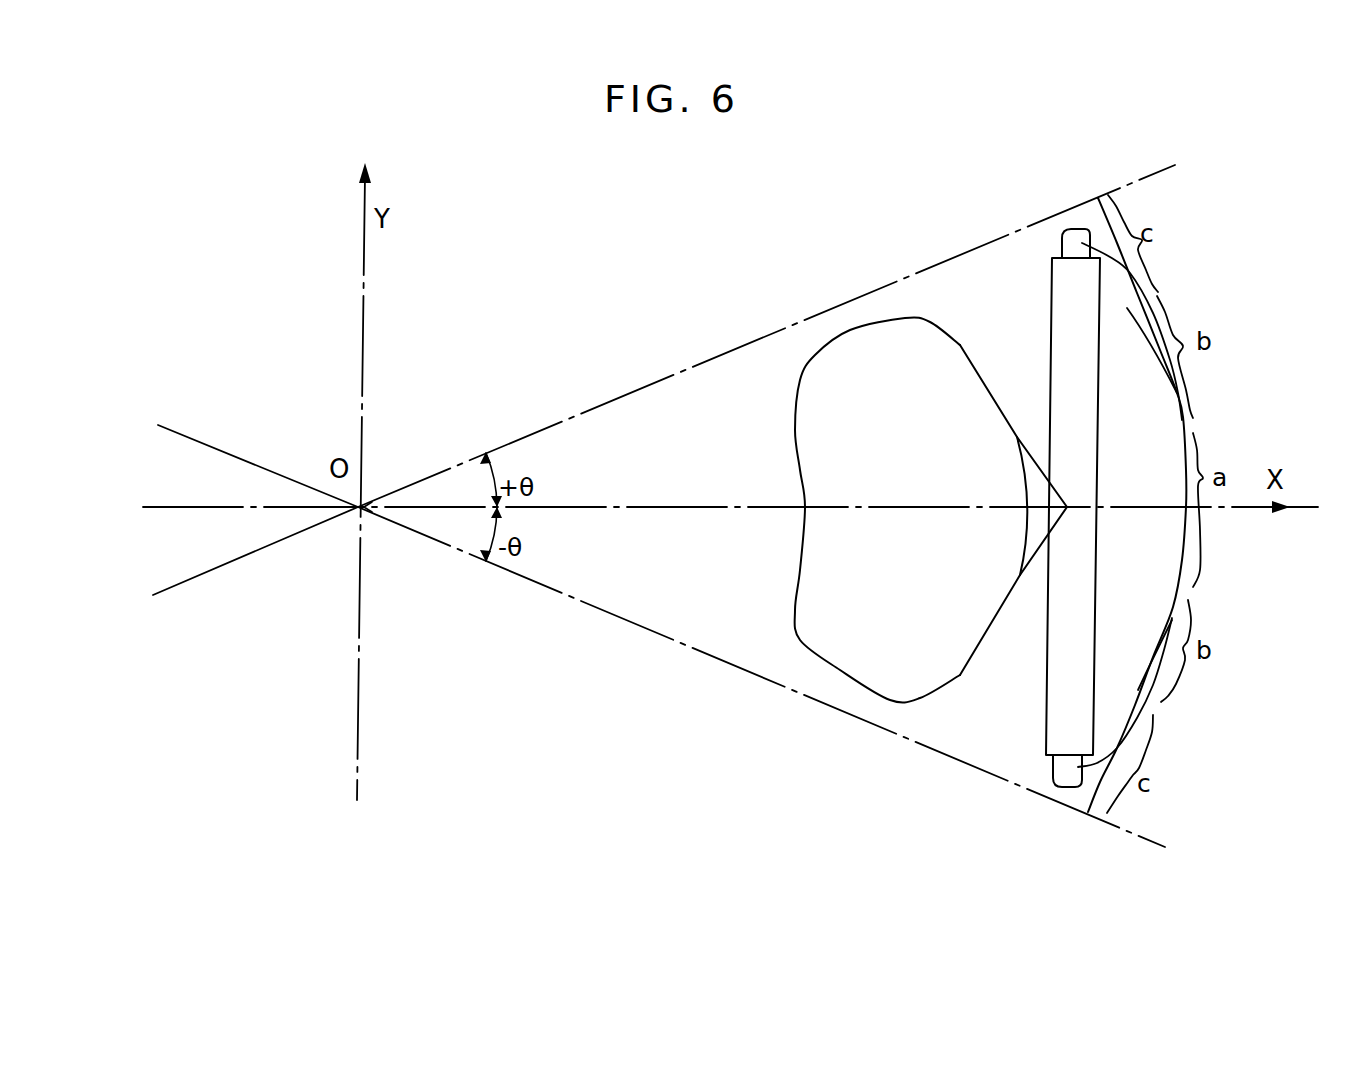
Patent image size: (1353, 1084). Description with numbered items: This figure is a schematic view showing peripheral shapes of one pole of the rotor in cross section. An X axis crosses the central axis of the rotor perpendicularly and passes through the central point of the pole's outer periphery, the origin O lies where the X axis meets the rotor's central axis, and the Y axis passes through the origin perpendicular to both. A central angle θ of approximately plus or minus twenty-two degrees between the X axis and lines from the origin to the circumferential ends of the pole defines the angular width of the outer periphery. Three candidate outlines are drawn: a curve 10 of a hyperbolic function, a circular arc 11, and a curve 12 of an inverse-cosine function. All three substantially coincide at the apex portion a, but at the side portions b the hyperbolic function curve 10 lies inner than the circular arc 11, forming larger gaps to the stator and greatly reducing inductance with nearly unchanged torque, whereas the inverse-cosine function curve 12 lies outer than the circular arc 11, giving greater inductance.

The curve of a hyperbolic function 10 is at (1162, 307).
The circular arc 11 is at (1163, 327).
The curve of a function (1/cos) 12 is at (1143, 258).